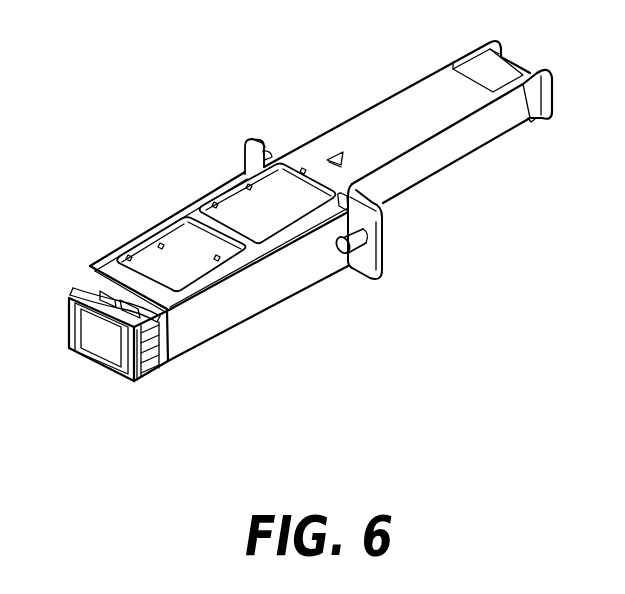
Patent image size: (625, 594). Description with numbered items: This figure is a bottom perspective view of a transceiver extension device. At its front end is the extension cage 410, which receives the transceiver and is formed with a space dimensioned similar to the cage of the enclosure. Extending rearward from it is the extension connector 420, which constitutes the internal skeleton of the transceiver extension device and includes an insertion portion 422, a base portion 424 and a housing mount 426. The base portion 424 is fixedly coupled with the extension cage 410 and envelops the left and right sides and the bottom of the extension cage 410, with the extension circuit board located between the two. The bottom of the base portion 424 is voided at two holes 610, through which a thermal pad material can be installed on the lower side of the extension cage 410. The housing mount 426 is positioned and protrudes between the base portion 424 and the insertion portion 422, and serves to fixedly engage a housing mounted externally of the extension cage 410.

The extension cage 410 is at (97, 361).
The extension connector 420 is at (503, 242).
The insertion portion 422 is at (398, 180).
The base portion 424 is at (297, 263).
The housing mount 426 is at (382, 252).
The holes 610 is at (265, 205).